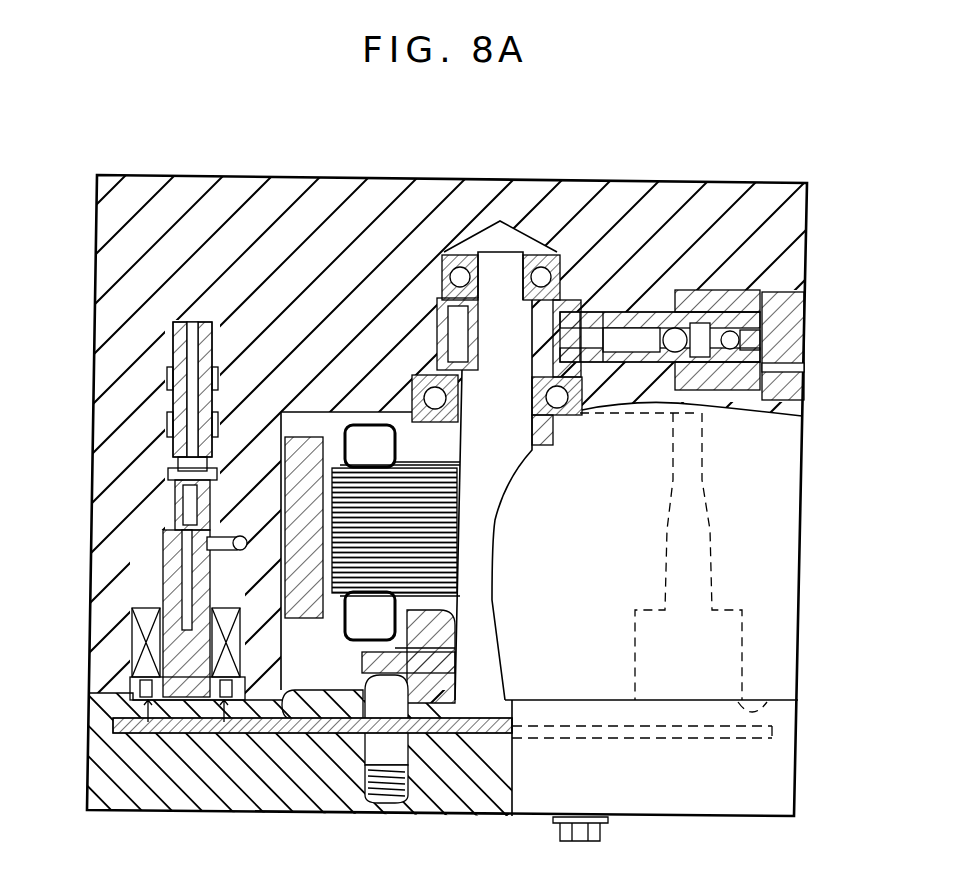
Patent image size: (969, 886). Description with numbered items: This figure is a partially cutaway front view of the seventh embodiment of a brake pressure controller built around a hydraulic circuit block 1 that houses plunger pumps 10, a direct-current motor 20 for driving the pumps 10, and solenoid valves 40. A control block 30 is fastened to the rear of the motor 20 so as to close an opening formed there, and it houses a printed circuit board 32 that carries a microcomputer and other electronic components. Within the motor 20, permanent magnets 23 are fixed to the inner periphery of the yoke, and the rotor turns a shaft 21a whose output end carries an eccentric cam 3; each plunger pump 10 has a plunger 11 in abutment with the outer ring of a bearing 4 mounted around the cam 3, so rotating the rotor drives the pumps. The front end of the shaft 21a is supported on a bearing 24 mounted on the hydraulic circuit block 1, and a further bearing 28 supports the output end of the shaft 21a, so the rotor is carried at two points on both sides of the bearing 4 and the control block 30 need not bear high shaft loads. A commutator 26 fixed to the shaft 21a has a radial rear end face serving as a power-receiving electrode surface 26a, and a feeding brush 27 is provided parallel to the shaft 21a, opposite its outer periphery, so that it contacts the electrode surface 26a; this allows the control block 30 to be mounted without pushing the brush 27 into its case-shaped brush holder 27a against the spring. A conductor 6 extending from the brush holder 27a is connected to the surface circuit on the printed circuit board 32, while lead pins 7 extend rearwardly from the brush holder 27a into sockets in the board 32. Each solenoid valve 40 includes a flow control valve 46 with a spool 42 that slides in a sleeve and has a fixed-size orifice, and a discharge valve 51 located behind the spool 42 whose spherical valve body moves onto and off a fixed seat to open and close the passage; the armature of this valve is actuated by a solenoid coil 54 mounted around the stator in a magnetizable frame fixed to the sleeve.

The hydraulic circuit block 1 is at (812, 210).
The cam 3 is at (517, 317).
The bearing 4 is at (568, 300).
The conductor 6 is at (425, 676).
The lead pins 7 is at (224, 735).
The plunger pump 10 is at (785, 298).
The plunger 11 is at (652, 310).
The direct-current motor 20 is at (357, 405).
The shaft 21a is at (487, 625).
The permanent magnets 23 is at (302, 445).
The bearing 24 is at (410, 372).
The commutator 26 is at (366, 708).
The power-receiving electrode surface 26a is at (440, 606).
The feeding brush 27 is at (383, 732).
The brush holder 27a is at (378, 808).
The bearing 28 is at (445, 253).
The control block 30 is at (800, 732).
The printed circuit board 32 is at (178, 735).
The solenoid valve 40 is at (128, 645).
The spool 42 is at (207, 322).
The flow control valve 46 is at (183, 316).
The discharge valve 51 is at (158, 575).
The solenoid coil 54 is at (140, 668).